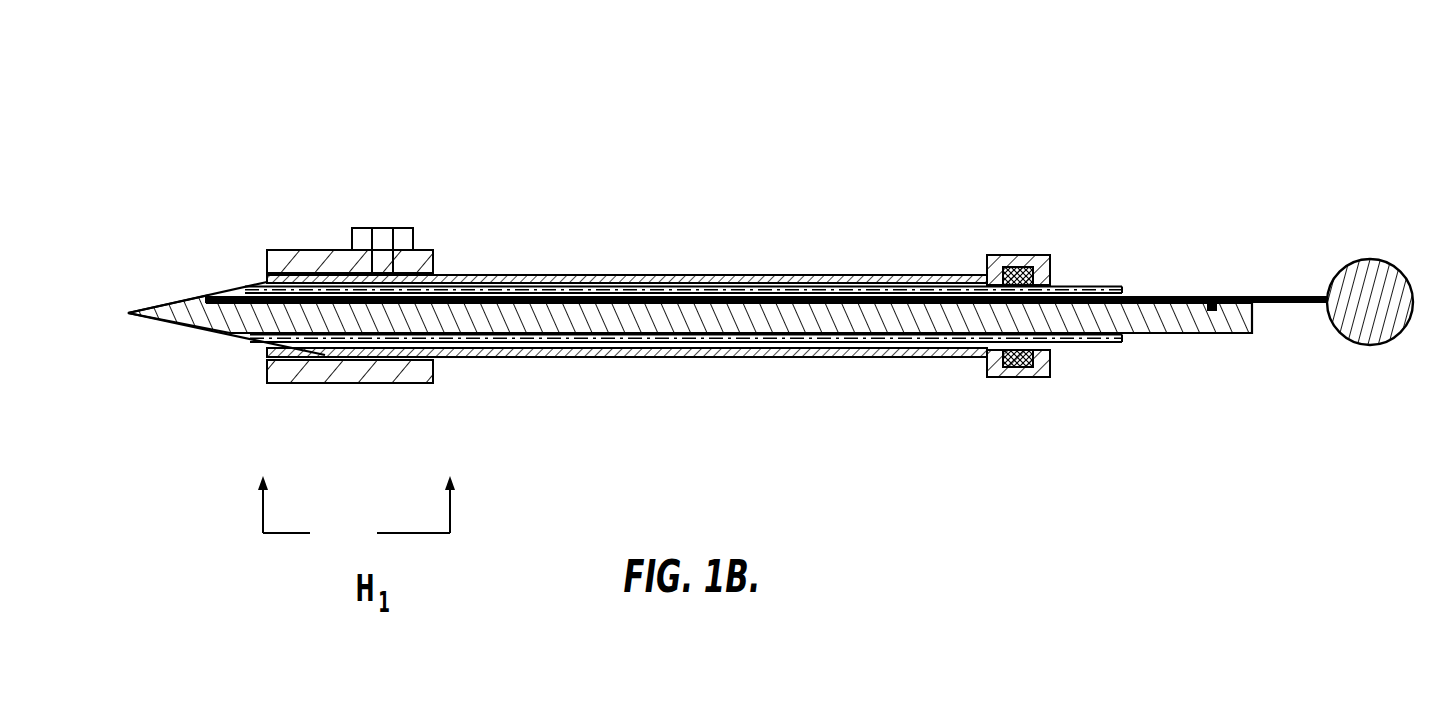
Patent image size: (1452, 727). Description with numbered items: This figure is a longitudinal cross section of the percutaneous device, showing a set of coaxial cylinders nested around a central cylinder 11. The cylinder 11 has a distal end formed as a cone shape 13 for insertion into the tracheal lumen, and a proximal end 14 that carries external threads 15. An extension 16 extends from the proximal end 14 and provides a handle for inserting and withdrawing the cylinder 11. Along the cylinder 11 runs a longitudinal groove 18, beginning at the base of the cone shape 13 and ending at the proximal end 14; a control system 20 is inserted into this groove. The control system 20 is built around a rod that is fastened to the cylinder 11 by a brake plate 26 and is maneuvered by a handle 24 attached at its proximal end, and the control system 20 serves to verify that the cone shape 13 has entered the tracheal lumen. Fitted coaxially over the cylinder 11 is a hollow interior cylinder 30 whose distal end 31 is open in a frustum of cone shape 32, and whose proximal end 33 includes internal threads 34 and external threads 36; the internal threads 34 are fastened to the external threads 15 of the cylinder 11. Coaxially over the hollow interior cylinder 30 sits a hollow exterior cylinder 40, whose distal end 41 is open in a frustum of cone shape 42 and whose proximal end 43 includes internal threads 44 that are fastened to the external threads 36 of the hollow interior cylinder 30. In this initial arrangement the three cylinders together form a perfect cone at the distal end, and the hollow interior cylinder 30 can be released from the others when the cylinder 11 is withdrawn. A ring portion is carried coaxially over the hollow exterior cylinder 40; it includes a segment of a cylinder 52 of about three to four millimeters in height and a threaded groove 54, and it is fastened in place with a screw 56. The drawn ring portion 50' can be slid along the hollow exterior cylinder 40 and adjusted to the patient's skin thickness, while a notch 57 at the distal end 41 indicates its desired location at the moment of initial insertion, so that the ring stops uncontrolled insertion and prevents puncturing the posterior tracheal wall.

The cylinder 11 is at (1167, 336).
The cone shape 13 is at (170, 320).
The proximal end 14 is at (1093, 317).
The external threads 15 is at (1047, 377).
The extension 16 is at (308, 250).
The longitudinal groove 18 is at (608, 297).
The control system 20 is at (1283, 297).
The handle 24 is at (1375, 259).
The brake plate 26 is at (1212, 303).
The hollow interior cylinder 30 is at (1086, 288).
The distal end 31 is at (246, 287).
The frustum of cone shape 32 is at (237, 290).
The proximal end 33 is at (1120, 290).
The internal threads 34 is at (970, 357).
The external threads 36 is at (1018, 257).
The hollow exterior cylinder 40 is at (868, 276).
The distal end 41 is at (350, 383).
The frustum of cone shape 42 is at (323, 357).
The proximal end 43 is at (975, 277).
The internal threads 44 is at (1010, 268).
The lower clamp plate 50' is at (358, 403).
The segment of a cylinder 52 is at (435, 262).
The threaded groove 54 is at (368, 265).
The screw 56 is at (365, 228).
The notch 57 is at (250, 284).